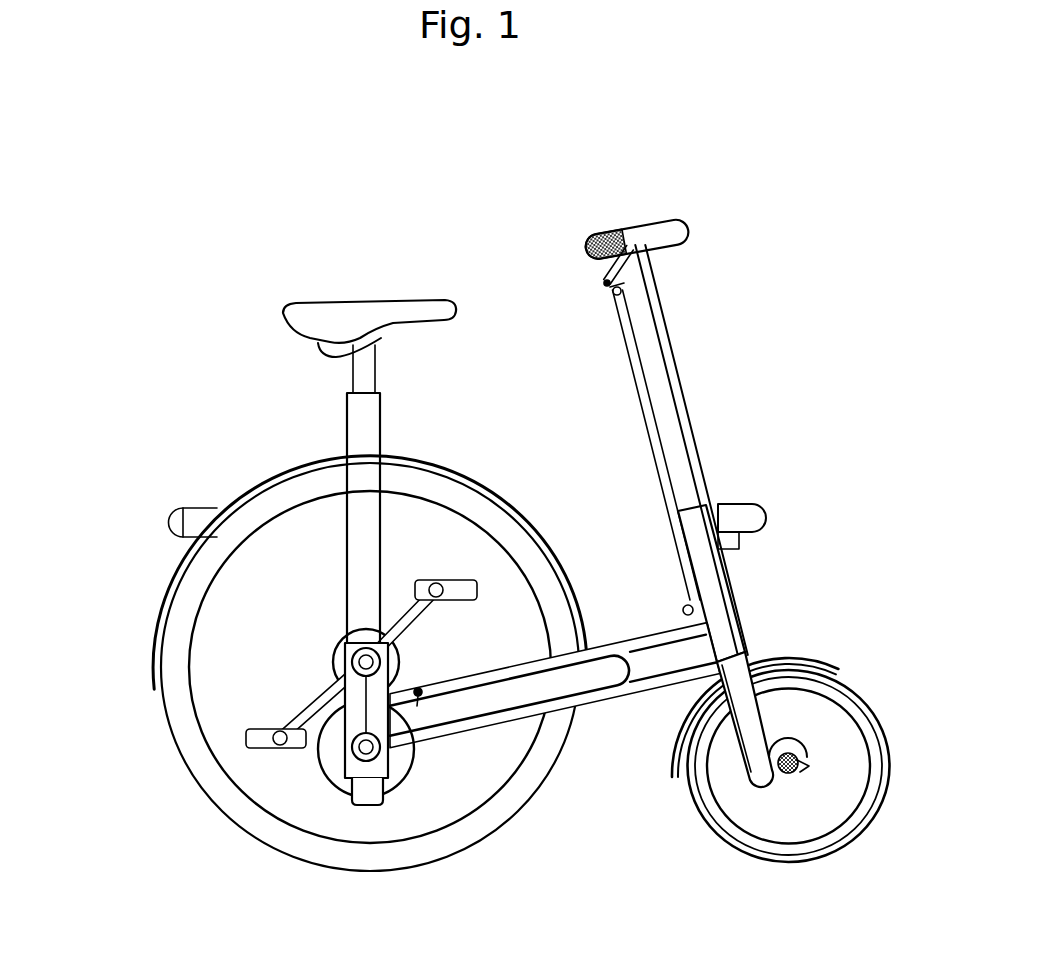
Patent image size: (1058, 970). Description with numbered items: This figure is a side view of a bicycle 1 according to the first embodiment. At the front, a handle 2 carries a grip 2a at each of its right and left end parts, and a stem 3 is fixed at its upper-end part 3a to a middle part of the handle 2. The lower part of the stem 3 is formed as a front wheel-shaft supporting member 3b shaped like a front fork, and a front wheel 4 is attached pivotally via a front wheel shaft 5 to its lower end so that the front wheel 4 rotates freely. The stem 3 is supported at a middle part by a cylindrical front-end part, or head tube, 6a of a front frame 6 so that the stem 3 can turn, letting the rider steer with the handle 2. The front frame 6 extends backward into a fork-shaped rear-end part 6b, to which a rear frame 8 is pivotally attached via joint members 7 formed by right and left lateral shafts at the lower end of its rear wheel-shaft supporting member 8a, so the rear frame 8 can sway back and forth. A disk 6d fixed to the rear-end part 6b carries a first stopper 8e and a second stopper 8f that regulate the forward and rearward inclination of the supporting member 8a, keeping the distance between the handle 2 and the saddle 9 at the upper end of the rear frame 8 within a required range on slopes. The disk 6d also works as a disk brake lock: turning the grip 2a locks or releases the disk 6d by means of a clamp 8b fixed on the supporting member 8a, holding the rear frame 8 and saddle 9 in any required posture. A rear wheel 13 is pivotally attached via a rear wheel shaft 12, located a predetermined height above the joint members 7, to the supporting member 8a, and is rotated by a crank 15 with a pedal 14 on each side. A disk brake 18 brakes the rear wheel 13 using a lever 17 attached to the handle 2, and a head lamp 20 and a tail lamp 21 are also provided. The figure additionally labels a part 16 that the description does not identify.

The bicycle 1 is at (462, 212).
The handle 2 is at (688, 236).
The grip 2a is at (612, 232).
The stem 3 is at (678, 374).
The upper-end part 3a is at (610, 272).
The front wheel-shaft supporting member 3b is at (748, 720).
The front wheel 4 is at (870, 717).
The front wheel shaft 5 is at (800, 762).
The front frame 6 is at (641, 650).
The front-end part (head tube) 6a is at (722, 606).
The fork-shaped rear-end part 6b is at (510, 700).
The disk 6d is at (333, 767).
The joint members 7 is at (352, 757).
The rear frame 8 is at (347, 418).
The rear wheel-shaft supporting member 8a is at (370, 517).
The clamp 8b is at (370, 806).
The first stopper 8e is at (420, 695).
The second stopper 8f is at (340, 697).
The saddle 9 is at (292, 319).
The rear wheel shaft 12 is at (347, 650).
The rear wheel 13 is at (176, 605).
The pedal 14 is at (462, 580).
The crank 15 is at (343, 640).
The motor 16 is at (375, 712).
The lever 17 is at (612, 286).
The disk brake 18 is at (350, 651).
The head lamp 20 is at (767, 518).
The tail lamp 21 is at (168, 523).